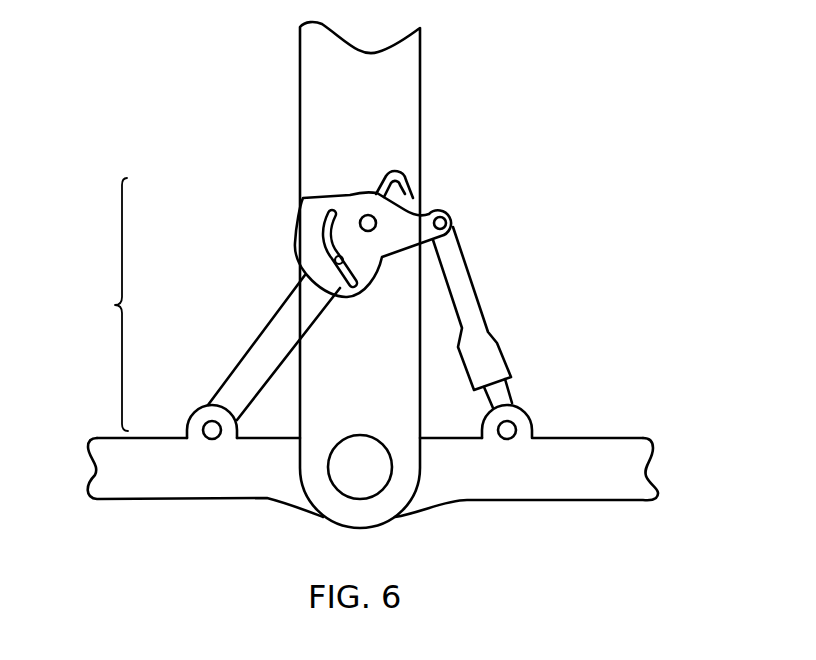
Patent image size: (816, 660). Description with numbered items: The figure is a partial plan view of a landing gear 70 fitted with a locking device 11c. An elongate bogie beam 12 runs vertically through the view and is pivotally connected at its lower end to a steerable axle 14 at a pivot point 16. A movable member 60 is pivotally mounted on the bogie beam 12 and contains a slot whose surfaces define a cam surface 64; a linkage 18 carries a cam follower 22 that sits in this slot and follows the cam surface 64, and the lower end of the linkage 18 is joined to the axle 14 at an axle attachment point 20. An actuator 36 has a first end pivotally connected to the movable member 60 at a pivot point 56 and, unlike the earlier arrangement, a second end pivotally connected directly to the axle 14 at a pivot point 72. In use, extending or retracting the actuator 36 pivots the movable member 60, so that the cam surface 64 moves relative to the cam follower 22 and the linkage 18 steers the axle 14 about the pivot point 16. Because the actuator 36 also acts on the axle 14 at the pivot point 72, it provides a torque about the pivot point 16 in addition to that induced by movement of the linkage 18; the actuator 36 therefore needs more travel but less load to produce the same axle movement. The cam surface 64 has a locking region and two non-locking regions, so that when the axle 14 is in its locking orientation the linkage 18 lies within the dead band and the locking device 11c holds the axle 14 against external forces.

The locking device 11c is at (113, 305).
The bogie beam 12 is at (400, 127).
The axle 14 is at (490, 487).
The pivot point 16 is at (357, 465).
The linkage 18 is at (250, 365).
The axle attachment point 20 is at (215, 434).
The cam follower 22 is at (335, 259).
The actuator 36 is at (466, 290).
The pivot point 56 is at (451, 224).
The movable member 60 is at (293, 252).
The cam surface 64 is at (313, 230).
The landing gear 70 is at (545, 148).
The pivot point 72 is at (514, 428).